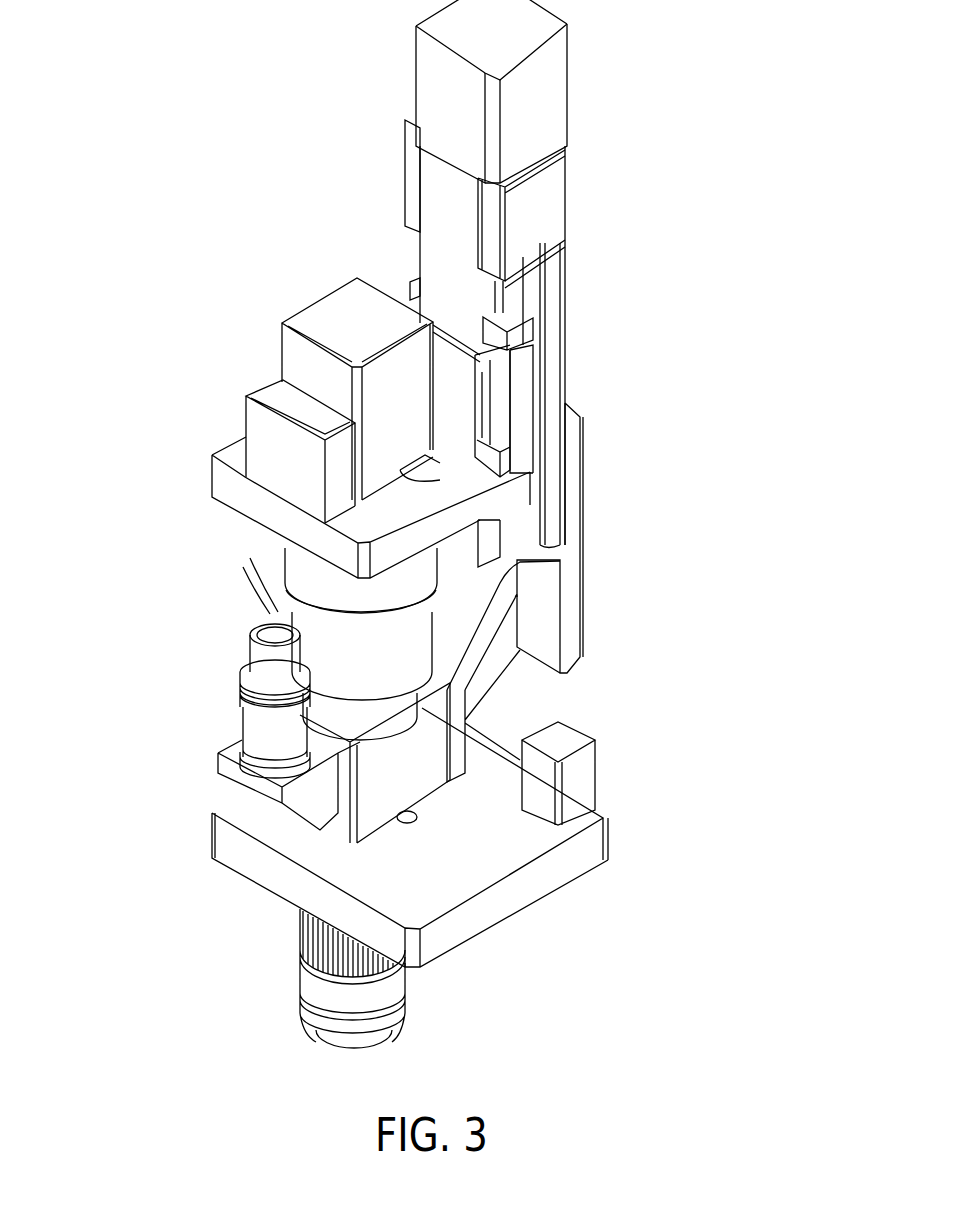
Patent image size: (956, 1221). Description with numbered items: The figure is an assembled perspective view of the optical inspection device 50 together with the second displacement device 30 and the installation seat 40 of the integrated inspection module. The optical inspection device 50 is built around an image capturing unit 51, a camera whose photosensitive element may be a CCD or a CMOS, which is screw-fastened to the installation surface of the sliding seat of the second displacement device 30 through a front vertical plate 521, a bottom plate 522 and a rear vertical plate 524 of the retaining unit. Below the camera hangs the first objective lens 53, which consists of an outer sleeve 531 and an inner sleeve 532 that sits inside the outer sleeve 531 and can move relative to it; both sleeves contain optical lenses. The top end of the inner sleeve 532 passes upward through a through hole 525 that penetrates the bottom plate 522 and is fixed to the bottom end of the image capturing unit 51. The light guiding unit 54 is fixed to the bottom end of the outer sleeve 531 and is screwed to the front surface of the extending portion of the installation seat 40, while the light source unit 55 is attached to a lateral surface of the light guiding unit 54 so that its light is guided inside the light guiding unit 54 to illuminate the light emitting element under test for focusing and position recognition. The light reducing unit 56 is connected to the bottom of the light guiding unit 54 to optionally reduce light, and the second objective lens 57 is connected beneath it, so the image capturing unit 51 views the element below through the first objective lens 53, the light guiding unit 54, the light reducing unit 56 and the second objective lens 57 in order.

The second displacement device 30 is at (578, 293).
The installation seat 40 is at (592, 526).
The optical inspection device 50 is at (328, 258).
The image capturing unit 51 is at (268, 341).
The front vertical plate 521 is at (258, 415).
The bottom plate 522 is at (232, 481).
The rear vertical plate 524 is at (485, 398).
The through hole 525 is at (434, 458).
The first objective lens 53 is at (515, 644).
The outer sleeve 531 is at (415, 637).
The inner sleeve 532 is at (410, 583).
The light guiding unit 54 is at (420, 741).
The light source unit 55 is at (258, 727).
The light reducing unit 56 is at (545, 912).
The second objective lens 57 is at (300, 970).